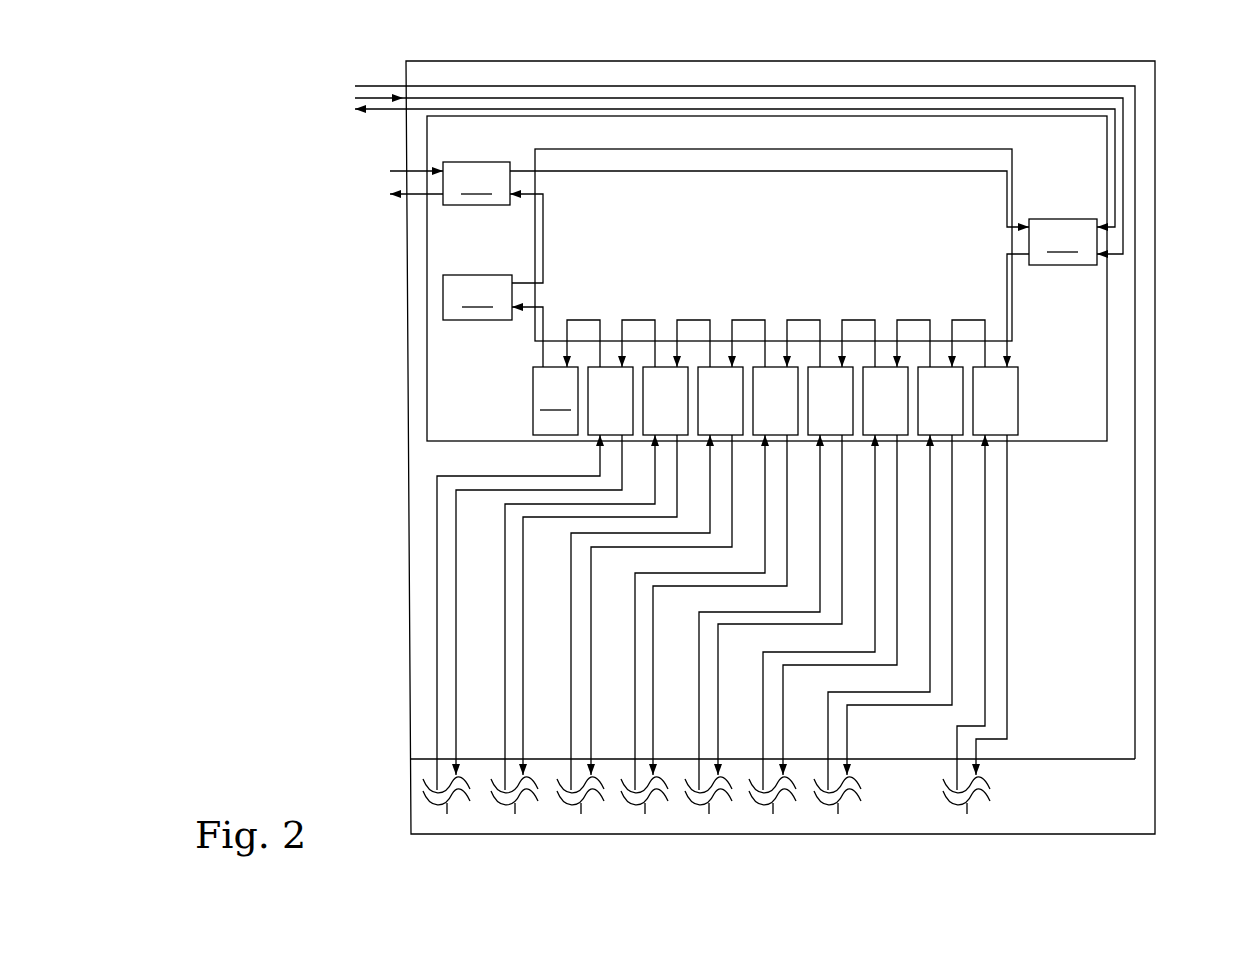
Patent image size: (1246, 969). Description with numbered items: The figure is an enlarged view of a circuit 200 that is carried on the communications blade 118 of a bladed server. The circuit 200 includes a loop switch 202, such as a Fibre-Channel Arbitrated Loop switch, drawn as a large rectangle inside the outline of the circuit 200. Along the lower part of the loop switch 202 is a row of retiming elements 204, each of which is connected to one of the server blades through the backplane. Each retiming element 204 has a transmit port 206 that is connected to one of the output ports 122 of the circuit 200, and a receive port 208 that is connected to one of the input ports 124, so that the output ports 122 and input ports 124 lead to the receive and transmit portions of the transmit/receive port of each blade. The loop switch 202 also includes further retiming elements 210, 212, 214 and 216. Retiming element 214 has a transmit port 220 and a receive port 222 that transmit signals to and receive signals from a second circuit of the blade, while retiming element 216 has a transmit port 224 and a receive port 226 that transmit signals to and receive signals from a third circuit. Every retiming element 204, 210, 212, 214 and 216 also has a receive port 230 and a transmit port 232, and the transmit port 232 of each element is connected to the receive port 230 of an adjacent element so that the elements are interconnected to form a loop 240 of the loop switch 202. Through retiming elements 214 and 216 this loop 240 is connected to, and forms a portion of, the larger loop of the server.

The communications blade 118 is at (1170, 108).
The circuit 200 is at (1153, 235).
The loop switch 202 is at (1083, 168).
The retiming elements 204 is at (1006, 410).
The transmit ports 206 is at (1032, 460).
The receive ports 208 is at (1027, 487).
The retiming element 210 is at (555, 401).
The retiming element 212 is at (477, 297).
The retiming element 214 is at (476, 183).
The retiming element 216 is at (1063, 242).
The transmit port 220 is at (442, 195).
The receive port 222 is at (440, 169).
The transmit port 224 is at (1098, 222).
The receive port 226 is at (1097, 258).
The receive ports 230 is at (513, 193).
The transmit ports 232 is at (510, 168).
The loop 240 is at (543, 222).
The output ports 122 is at (1007, 790).
The input ports 124 is at (957, 762).